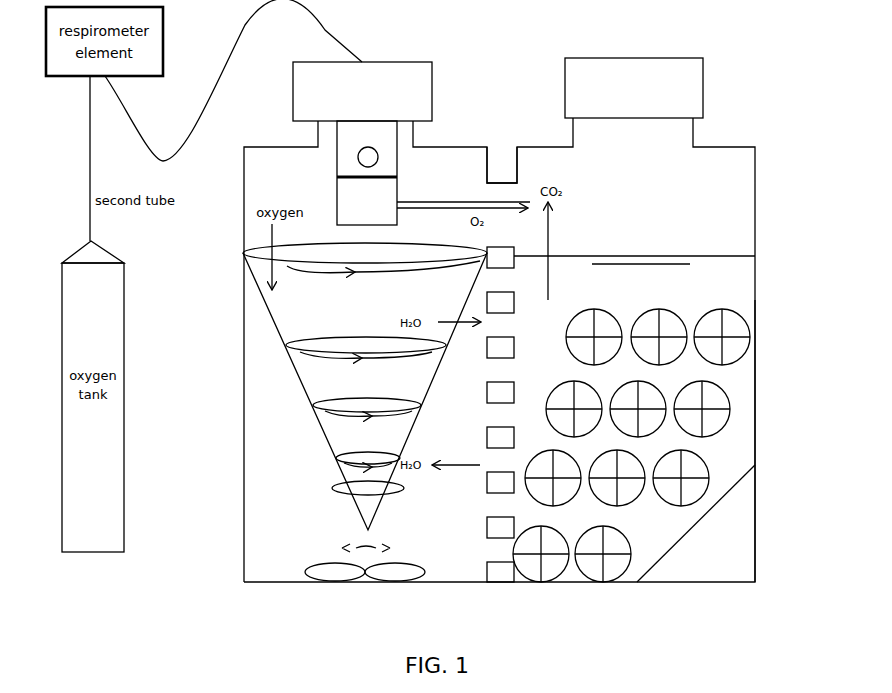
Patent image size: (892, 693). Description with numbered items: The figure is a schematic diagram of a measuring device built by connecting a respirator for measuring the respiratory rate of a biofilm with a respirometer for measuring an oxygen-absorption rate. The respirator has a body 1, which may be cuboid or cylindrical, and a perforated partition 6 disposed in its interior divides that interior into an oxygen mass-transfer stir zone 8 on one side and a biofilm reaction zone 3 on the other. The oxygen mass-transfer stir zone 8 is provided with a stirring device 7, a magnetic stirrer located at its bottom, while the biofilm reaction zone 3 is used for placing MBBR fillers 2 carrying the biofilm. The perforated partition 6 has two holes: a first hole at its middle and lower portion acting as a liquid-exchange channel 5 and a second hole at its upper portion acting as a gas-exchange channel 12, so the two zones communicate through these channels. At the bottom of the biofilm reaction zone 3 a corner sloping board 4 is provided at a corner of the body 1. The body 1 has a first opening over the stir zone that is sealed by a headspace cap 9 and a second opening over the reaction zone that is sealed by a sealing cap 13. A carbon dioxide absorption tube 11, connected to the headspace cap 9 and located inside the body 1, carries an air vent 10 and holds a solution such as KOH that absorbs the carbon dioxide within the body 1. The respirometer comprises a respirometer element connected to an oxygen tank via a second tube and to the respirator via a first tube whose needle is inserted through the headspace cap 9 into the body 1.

The body 1 is at (760, 147).
The MBBR fillers 2 is at (737, 328).
The biofilm reaction zone 3 is at (737, 440).
The corner sloping board 4 is at (727, 535).
The liquid-exchange channel 5 is at (537, 582).
The perforated partition 6 is at (500, 574).
The stirring device 7 is at (300, 575).
The oxygen mass-transfer stir zone 8 is at (292, 508).
The headspace cap 9 is at (312, 97).
The air vent 10 is at (377, 147).
The carbon dioxide absorption tube 11 is at (413, 147).
The gas-exchange channel 12 is at (493, 193).
The sealing cap 13 is at (680, 88).